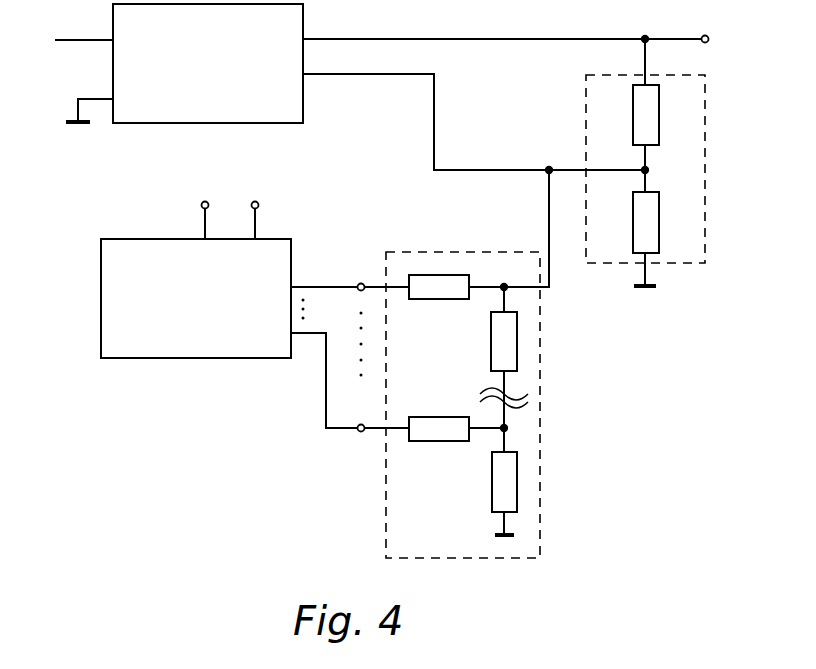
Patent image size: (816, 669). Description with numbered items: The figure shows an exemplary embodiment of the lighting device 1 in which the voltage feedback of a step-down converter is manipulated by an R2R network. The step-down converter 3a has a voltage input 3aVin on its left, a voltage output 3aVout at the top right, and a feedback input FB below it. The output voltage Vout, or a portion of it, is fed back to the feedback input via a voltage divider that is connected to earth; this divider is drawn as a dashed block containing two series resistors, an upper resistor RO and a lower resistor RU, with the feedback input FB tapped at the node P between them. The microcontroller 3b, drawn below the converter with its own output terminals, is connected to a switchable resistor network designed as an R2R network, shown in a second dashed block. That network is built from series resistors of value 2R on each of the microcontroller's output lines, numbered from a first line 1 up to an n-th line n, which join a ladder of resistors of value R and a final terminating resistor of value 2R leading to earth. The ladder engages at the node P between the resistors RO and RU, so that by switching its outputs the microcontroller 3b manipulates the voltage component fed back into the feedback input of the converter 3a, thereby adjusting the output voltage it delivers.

The step-down converter 3a is at (208, 63).
The microcontroller 3b is at (196, 298).
The voltage input 3aVin is at (79, 28).
The voltage output 3aVout is at (510, 29).
The feedback input FB is at (474, 114).
The upper resistor of the voltage divider RO is at (659, 115).
The lower resistor of the voltage divider RU is at (658, 239).
The node P is at (654, 170).
The output voltage Vout is at (275, 221).
The n-th output terminal n is at (350, 279).
The lighting device 1 is at (350, 382).
The 2R resistor of the R2R network 2R is at (463, 405).
The R resistor of the R2R network R is at (501, 357).